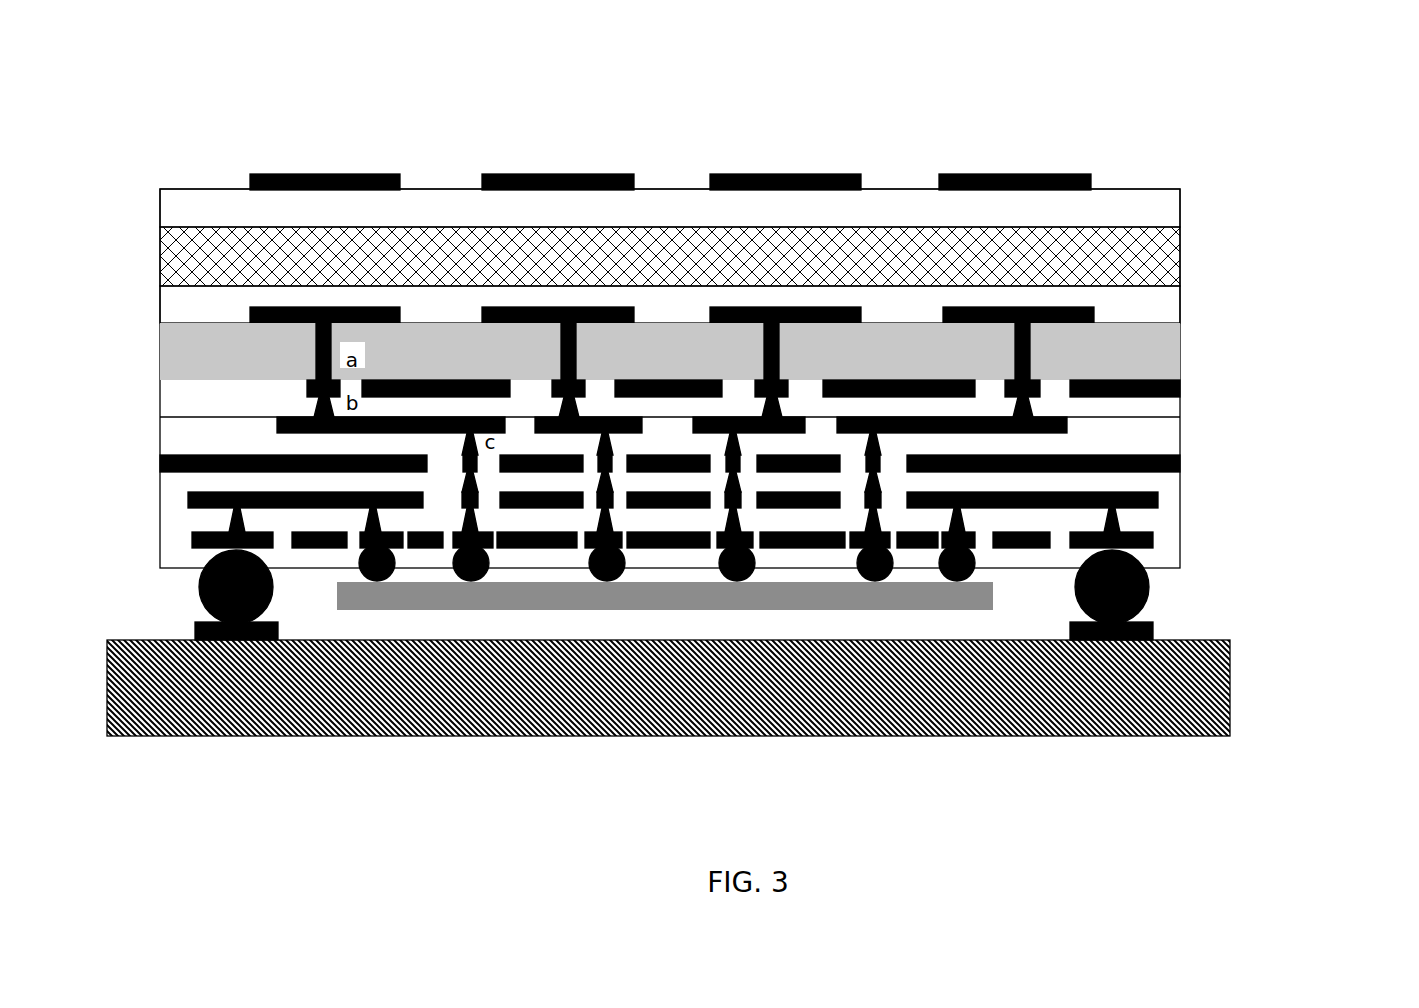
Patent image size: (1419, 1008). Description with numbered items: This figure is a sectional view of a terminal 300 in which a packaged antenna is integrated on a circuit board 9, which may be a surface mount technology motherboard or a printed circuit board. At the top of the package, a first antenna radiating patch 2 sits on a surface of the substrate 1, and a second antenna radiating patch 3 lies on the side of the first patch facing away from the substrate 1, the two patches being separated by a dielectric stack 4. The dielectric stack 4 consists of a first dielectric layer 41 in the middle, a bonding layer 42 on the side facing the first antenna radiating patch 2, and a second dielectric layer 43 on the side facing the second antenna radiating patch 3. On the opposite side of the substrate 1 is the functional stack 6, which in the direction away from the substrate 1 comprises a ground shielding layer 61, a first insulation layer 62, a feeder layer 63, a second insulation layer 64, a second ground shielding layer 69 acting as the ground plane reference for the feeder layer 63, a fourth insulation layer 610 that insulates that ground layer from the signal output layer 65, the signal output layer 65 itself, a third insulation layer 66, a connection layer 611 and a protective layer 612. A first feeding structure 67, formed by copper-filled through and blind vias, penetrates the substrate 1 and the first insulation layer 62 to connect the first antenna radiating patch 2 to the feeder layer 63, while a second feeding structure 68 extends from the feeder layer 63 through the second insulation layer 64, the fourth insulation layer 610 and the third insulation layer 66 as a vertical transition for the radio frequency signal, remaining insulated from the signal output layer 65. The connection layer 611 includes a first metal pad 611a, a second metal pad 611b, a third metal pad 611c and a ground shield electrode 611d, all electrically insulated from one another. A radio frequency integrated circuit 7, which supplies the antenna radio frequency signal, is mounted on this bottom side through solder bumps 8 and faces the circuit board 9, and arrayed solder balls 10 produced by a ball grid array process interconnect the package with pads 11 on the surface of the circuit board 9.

The terminal 300 is at (1120, 59).
The substrate 1 is at (188, 358).
The first antenna radiating patch 2 is at (250, 315).
The second antenna radiating patch 3 is at (307, 172).
The dielectric stack 4 is at (614, 255).
The first dielectric layer 41 is at (178, 254).
The bonding layer 42 is at (180, 302).
The second dielectric layer 43 is at (178, 208).
The functional stack 6 is at (1333, 190).
The ground shielding layer 61 is at (1180, 387).
The first insulation layer 62 is at (1127, 401).
The feeder layer 63 is at (1067, 425).
The second insulation layer 64 is at (1125, 436).
The signal output layer 65 is at (1157, 498).
The third insulation layer 66 is at (1127, 520).
The first feeding structure 67 is at (1030, 355).
The second feeding structure 68 is at (890, 449).
The second ground shielding layer 69 is at (1180, 462).
The fourth insulation layer 610 is at (1125, 479).
The connection layer 611 is at (761, 689).
The first metal pad 611a is at (593, 547).
The second metal pad 611b is at (393, 547).
The third metal pad 611c is at (265, 547).
The ground shield electrode 611d is at (649, 659).
The protective layer 612 is at (1150, 555).
The radio frequency integrated circuit 7 is at (958, 580).
The solder bump 8 is at (883, 580).
The circuit board 9 is at (1230, 700).
The solder ball 10 is at (1150, 593).
The pads 11 is at (1117, 638).